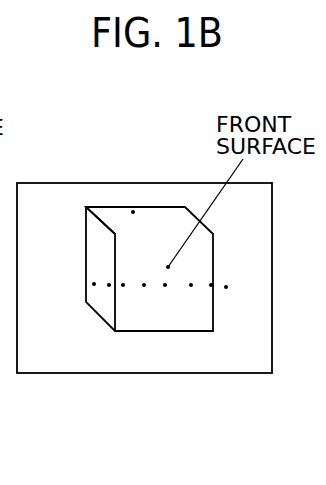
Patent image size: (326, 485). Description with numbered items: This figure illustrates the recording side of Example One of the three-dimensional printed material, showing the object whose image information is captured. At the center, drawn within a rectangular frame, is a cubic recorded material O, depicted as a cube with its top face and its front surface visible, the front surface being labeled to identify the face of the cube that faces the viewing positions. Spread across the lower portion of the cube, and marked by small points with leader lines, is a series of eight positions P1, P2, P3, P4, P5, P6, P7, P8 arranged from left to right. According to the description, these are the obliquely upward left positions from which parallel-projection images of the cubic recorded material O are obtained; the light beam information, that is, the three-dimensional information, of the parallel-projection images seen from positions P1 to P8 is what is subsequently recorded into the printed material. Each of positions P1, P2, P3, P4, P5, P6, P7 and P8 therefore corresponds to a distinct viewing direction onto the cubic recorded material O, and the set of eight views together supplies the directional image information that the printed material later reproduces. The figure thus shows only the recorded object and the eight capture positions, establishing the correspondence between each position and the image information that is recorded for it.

The cubic recorded material O is at (133, 212).
The position P1 is at (94, 284).
The position P2 is at (109, 285).
The position P3 is at (123, 285).
The position P4 is at (144, 285).
The position P5 is at (165, 285).
The position P6 is at (191, 285).
The position P7 is at (211, 285).
The position P8 is at (226, 287).